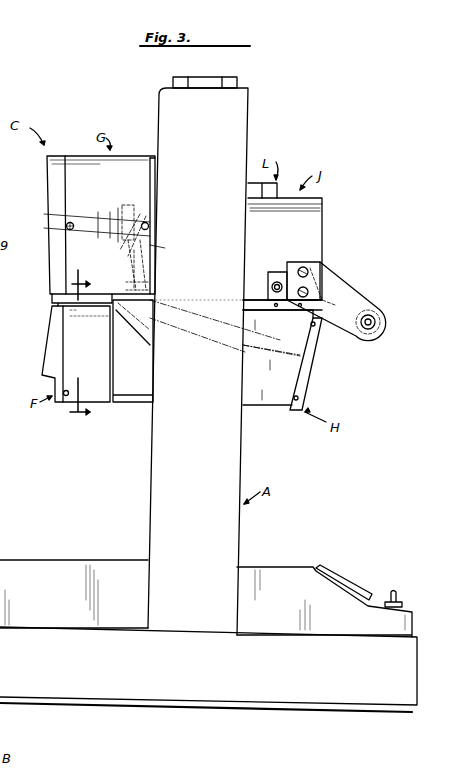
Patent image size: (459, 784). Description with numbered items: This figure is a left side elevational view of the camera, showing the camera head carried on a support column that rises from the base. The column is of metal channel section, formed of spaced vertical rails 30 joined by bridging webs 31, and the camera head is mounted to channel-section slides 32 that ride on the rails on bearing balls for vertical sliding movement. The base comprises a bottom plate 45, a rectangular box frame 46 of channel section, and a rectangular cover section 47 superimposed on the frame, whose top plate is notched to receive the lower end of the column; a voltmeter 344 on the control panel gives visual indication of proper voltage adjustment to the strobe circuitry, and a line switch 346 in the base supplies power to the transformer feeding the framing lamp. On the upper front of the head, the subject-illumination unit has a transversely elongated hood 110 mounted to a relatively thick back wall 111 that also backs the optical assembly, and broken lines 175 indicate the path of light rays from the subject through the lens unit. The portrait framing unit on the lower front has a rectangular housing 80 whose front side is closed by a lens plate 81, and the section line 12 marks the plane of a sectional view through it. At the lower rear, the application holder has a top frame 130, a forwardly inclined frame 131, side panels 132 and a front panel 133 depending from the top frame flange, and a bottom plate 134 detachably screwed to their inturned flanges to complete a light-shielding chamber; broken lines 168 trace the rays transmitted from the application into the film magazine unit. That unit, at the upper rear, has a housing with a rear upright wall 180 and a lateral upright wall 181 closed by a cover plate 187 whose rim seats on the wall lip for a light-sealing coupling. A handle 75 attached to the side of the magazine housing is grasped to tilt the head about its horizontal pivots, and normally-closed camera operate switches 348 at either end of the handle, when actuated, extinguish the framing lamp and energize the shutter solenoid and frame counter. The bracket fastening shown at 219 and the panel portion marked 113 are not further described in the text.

The vertical rails 30 is at (151, 452).
The bridging webs 31 is at (198, 361).
The slides 32 is at (213, 79).
The hood 110 is at (80, 152).
The back wall 111 is at (157, 158).
The broken lines indicating subject light path 175 is at (130, 206).
The housing panel 113 is at (78, 256).
The broken lines indicating application light path 168 is at (165, 250).
The section line 12 is at (86, 349).
The housing 80 is at (76, 354).
The lens plate 81 is at (52, 362).
The front panel 133 is at (112, 402).
The rear upright wall 180 is at (322, 234).
The cover plate 187 is at (322, 201).
The lateral upright wall 181 is at (280, 235).
The top frame 130 is at (243, 300).
The nut 219 is at (268, 284).
The handle 75 is at (372, 310).
The camera operate switches 348 is at (374, 324).
The side panels 132 is at (288, 376).
The frame 131 is at (309, 352).
The bottom plate 134 is at (256, 405).
The cover section 47 is at (253, 567).
The voltmeter 344 is at (355, 588).
The line switch 346 is at (408, 588).
The bottom plate 45 is at (160, 708).
The box frame 46 is at (235, 705).